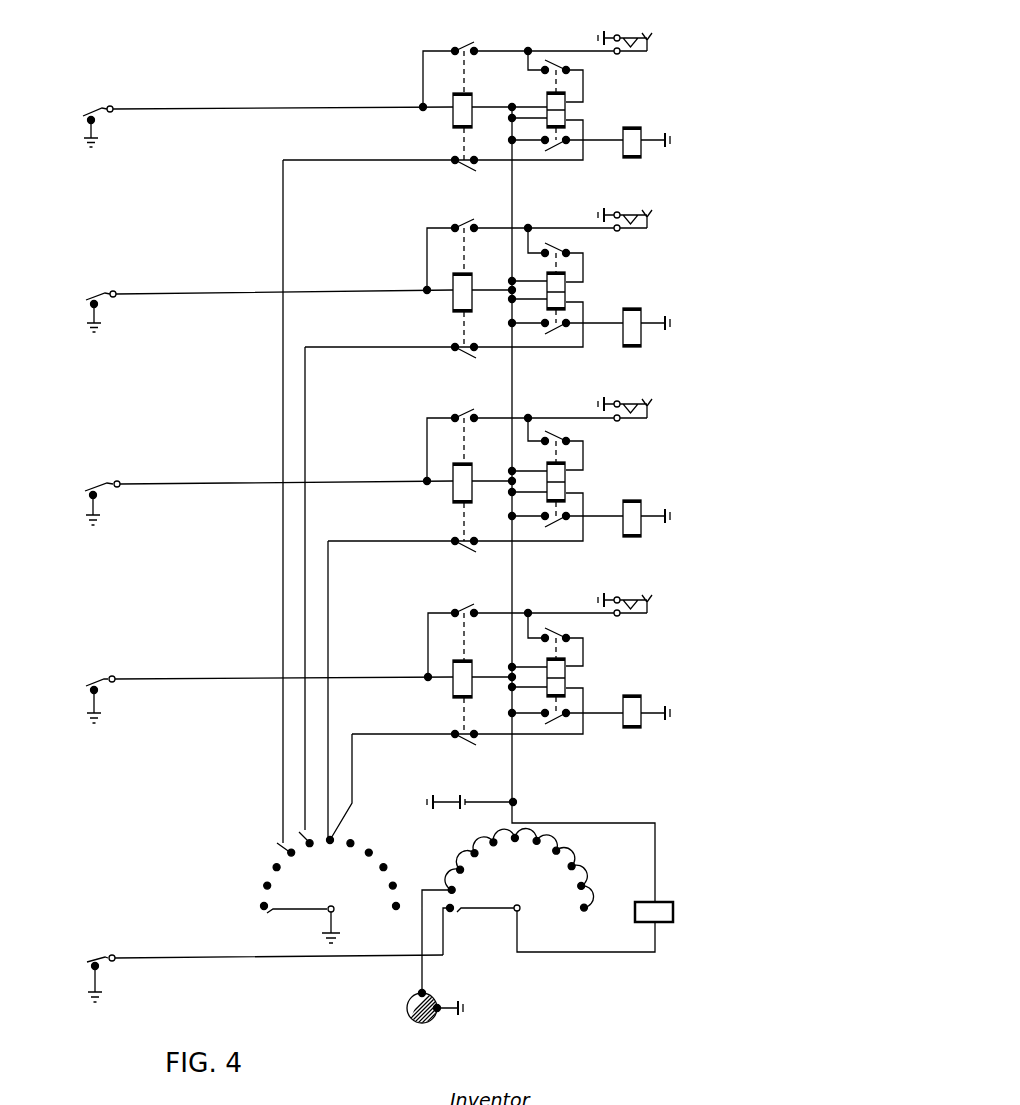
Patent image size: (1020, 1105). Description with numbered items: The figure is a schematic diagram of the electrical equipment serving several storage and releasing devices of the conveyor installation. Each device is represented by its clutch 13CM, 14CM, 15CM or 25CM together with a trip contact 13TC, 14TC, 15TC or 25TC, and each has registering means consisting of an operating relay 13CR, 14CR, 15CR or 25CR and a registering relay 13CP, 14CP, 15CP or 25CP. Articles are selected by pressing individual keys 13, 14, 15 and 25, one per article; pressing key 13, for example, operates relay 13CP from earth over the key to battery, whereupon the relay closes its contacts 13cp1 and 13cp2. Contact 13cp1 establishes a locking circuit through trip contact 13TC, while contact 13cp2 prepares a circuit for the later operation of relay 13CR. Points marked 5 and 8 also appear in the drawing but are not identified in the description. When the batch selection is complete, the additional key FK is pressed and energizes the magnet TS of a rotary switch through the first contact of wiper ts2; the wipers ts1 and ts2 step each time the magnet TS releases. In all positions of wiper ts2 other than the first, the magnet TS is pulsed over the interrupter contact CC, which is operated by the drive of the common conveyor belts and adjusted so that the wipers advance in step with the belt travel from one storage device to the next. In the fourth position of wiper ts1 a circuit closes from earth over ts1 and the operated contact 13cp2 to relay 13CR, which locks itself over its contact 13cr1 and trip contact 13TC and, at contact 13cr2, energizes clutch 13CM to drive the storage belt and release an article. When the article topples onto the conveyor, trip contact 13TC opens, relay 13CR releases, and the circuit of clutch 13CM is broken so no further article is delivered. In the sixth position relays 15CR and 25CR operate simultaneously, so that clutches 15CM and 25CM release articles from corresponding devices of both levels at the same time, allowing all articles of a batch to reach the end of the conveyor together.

The key 13 is at (255, 126).
The key 14 is at (252, 311).
The key 15 is at (254, 503).
The key 25 is at (252, 699).
The additional key FK is at (247, 978).
The contact of relay 13CP 13cp1 is at (517, 69).
The contact of relay 13CP 13cp2 is at (392, 505).
The contact of relay 13CR 13cr1 is at (569, 76).
The contact of relay 13CR 13cr2 is at (453, 145).
The registering relay 13CP is at (482, 105).
The operating relay 13CR is at (556, 105).
The clutch 13CM is at (645, 132).
The trip contact 13TC is at (625, 34).
The contact 5 is at (580, 43).
The lead 8 is at (606, 148).
The registering relay 14CP is at (484, 287).
The operating relay 14CR is at (556, 288).
The clutch 14CM is at (643, 318).
The trip contact 14TC is at (629, 208).
The registering relay 15CP is at (484, 479).
The operating relay 15CR is at (556, 478).
The clutch 15CM is at (642, 508).
The trip contact 15TC is at (630, 397).
The registering relay 25CP is at (484, 673).
The operating relay 25CR is at (558, 675).
The clutch 25CM is at (644, 700).
The trip contact 25TC is at (629, 594).
The wiper and contact bank ts1 is at (330, 890).
The wiper and contact bank ts2 is at (538, 910).
The magnet of rotary switch TS is at (647, 903).
The interrupter contact CC is at (419, 1008).